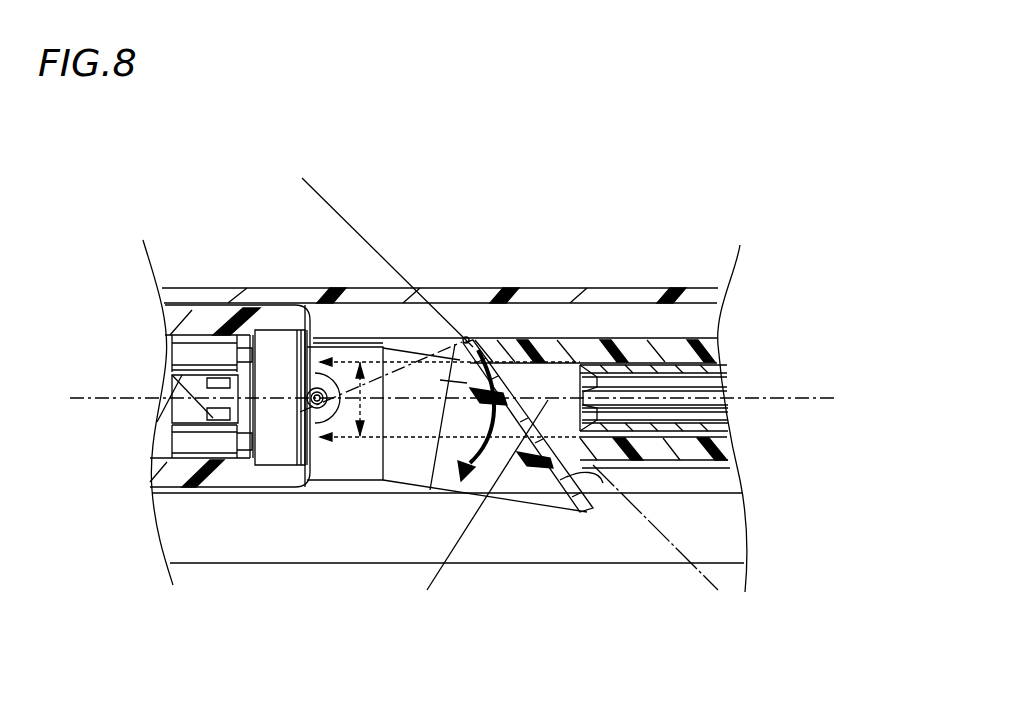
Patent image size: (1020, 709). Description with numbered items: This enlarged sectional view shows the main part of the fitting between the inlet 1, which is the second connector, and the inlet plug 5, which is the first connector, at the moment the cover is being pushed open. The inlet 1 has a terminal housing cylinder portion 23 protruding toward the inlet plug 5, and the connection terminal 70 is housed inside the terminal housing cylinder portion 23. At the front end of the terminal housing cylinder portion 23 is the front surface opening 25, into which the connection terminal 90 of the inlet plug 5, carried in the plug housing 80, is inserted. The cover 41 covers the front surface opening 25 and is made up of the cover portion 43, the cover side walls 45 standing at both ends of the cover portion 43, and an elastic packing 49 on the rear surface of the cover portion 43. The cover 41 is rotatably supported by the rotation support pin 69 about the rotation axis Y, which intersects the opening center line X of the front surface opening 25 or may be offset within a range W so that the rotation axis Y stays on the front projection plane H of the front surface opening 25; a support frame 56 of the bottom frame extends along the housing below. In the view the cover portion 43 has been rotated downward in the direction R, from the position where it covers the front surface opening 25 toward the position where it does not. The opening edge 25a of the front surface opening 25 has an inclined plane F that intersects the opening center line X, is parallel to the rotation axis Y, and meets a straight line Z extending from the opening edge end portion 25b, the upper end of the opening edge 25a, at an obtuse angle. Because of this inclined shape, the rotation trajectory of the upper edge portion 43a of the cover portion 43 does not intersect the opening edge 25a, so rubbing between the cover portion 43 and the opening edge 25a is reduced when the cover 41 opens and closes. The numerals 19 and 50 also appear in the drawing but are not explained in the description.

The inlet 1 is at (604, 290).
The inlet plug 5 is at (268, 307).
The gap 19 is at (525, 322).
The terminal housing cylinder portion 23 is at (638, 350).
The front surface opening 25 is at (470, 455).
The opening edge 25a is at (548, 482).
The opening edge end portion 25b is at (467, 337).
The cover 41 is at (565, 512).
The cover portion 43 is at (540, 413).
The upper edge portion 43a is at (460, 337).
The cover side wall 45 is at (410, 450).
The elastic packing 49 is at (607, 470).
The outer housing 50 is at (460, 288).
The support frame 56 is at (347, 410).
The rotation support pin 69 is at (312, 445).
The connection terminal 70 is at (672, 362).
The plug housing 80 is at (172, 483).
The connection terminal 90 is at (193, 380).
The opening center line X is at (86, 350).
The rotation axis Y is at (252, 330).
The straight line Z is at (270, 478).
The front projection plane H is at (315, 330).
The range W is at (358, 470).
The direction R is at (430, 430).
The inclined plane F is at (700, 590).